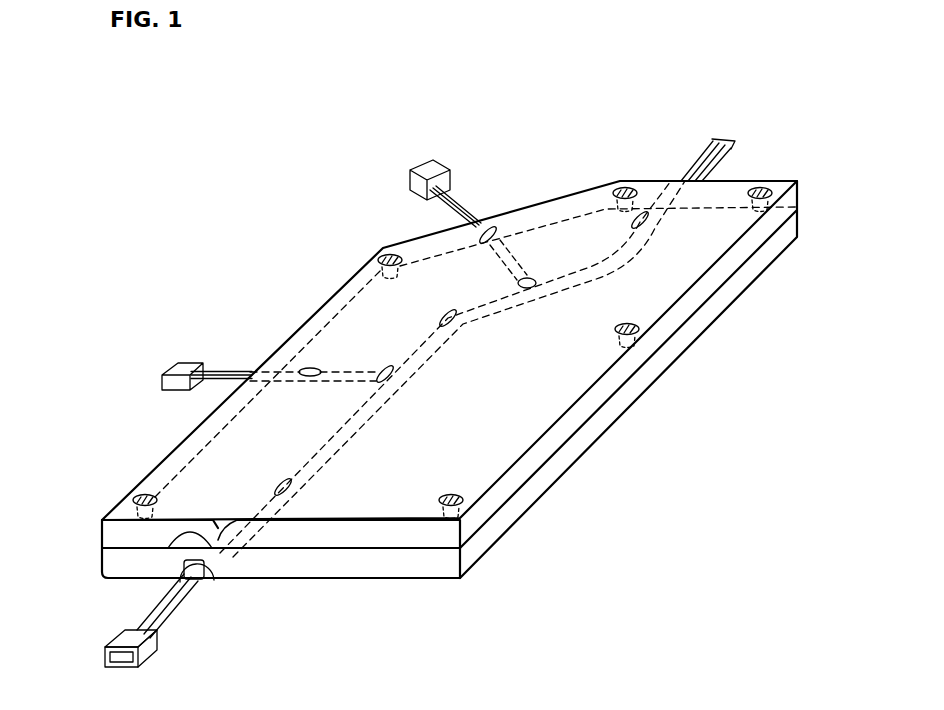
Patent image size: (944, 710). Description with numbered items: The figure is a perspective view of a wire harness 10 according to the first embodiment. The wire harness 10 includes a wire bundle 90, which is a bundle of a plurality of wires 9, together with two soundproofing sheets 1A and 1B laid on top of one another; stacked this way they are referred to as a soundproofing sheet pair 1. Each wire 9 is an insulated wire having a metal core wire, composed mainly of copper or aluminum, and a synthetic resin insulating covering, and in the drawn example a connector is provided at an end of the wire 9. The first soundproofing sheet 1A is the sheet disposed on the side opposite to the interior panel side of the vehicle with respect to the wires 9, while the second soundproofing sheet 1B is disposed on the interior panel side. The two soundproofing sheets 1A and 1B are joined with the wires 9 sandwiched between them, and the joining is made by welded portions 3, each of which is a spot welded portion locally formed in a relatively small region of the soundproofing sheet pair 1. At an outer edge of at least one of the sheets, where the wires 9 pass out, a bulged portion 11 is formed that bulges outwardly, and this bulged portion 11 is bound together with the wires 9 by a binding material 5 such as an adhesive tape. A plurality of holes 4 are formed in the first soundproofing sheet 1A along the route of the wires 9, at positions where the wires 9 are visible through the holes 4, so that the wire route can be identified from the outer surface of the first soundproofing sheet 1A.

The wire harness 10 is at (289, 209).
The soundproofing sheet pair 1 is at (608, 487).
The first soundproofing sheet 1A is at (516, 470).
The second soundproofing sheet 1B is at (516, 505).
The welded portion 3 is at (380, 260).
The hole 4 is at (309, 367).
The binding material 5 is at (213, 569).
The wire 9 is at (170, 603).
The bulged portion 11 is at (172, 537).
The wire bundle 90 is at (336, 445).